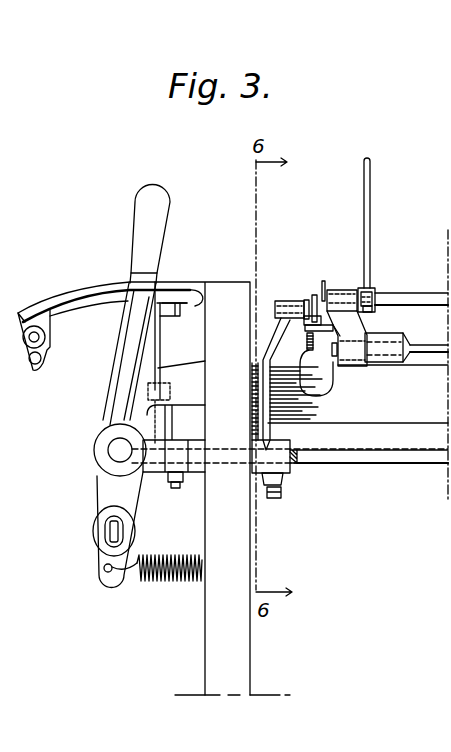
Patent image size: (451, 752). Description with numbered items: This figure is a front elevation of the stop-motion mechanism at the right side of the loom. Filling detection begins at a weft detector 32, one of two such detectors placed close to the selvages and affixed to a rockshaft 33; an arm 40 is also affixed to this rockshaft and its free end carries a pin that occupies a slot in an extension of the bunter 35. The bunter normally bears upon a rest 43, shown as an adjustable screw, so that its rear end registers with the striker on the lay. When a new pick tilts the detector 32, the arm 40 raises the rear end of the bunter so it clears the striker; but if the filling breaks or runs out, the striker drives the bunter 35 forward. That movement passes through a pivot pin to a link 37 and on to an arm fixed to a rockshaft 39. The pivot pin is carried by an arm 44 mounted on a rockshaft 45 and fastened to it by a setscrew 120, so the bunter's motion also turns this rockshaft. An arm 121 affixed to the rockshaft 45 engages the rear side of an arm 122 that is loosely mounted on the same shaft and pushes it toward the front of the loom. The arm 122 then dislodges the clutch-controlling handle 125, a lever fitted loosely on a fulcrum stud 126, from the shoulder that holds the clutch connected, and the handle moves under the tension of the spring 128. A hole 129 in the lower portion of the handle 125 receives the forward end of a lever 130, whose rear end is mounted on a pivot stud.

The weft detector 32 is at (372, 188).
The rockshaft 33 is at (410, 297).
The bunter 35 is at (309, 292).
The link 37 is at (305, 302).
The rockshaft 39 is at (423, 352).
The arm 40 is at (323, 285).
The rest 43 is at (318, 350).
The arm 44 is at (263, 346).
The rockshaft 45 is at (412, 453).
The setscrew 120 is at (283, 492).
The arm 121 is at (167, 422).
The arm 122 is at (160, 352).
The clutch-controlling handle 125 is at (139, 220).
The fulcrum stud 126 is at (120, 450).
The spring 128 is at (167, 583).
The hole 129 is at (103, 530).
The lever 130 is at (122, 530).